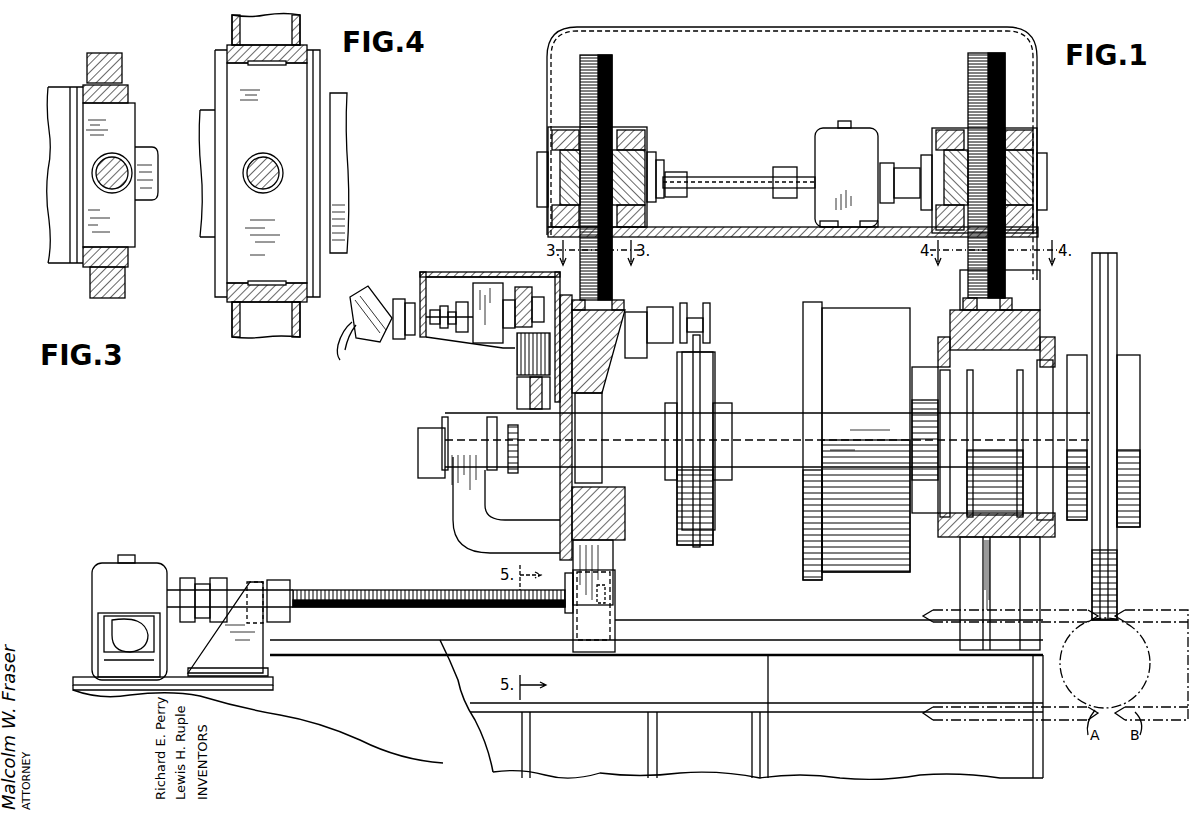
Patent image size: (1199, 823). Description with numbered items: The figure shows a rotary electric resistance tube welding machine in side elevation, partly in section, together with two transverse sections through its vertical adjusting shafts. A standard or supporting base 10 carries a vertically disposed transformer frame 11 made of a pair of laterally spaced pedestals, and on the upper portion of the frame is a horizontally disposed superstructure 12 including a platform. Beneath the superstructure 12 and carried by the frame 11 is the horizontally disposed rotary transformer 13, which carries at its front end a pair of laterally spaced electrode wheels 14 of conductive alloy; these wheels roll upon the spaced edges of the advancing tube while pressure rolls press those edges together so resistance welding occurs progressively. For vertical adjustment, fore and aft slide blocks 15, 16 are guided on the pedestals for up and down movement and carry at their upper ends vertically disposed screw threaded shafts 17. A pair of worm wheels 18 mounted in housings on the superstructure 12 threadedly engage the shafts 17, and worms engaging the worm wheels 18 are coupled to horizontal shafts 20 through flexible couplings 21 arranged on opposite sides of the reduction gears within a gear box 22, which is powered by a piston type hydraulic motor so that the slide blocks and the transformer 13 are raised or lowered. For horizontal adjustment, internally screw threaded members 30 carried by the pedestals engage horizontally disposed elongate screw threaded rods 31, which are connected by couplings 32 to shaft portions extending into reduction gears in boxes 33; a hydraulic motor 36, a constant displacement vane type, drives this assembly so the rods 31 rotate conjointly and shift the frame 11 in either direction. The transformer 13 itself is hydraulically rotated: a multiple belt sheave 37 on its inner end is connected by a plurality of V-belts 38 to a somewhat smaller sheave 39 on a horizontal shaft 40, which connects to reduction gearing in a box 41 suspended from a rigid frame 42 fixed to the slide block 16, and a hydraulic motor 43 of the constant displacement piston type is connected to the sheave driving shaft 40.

In FIG. 1, the supporting base 10 is at (448, 760).
In FIG. 3, the transformer frame 11 is at (127, 296).
In FIG. 4, the transformer frame 11 is at (300, 325).
In FIG. 1, the transformer frame 11 is at (958, 588).
In FIG. 1, the superstructure 12 is at (768, 238).
In FIG. 3, the rotary transformer 13 is at (150, 146).
In FIG. 4, the rotary transformer 13 is at (352, 194).
In FIG. 1, the rotary transformer 13 is at (802, 548).
In FIG. 1, the electrode wheels 14 is at (1104, 253).
In FIG. 4, the slide block 15 is at (232, 270).
In FIG. 1, the slide block 15 is at (1030, 325).
In FIG. 3, the slide block 16 is at (133, 223).
In FIG. 1, the slide block 16 is at (612, 322).
In FIG. 3, the screw threaded shafts 17 is at (100, 171).
In FIG. 4, the screw threaded shafts 17 is at (243, 173).
In FIG. 1, the screw threaded shafts 17 is at (613, 100).
In FIG. 1, the worm wheels 18 is at (1046, 172).
In FIG. 1, the horizontal shafts 20 is at (740, 190).
In FIG. 1, the flexible couplings 21 is at (780, 193).
In FIG. 1, the gear box 22 is at (856, 175).
In FIG. 1, the internally screw threaded members 30 is at (568, 615).
In FIG. 1, the screw threaded rods 31 is at (370, 590).
In FIG. 1, the couplings 32 is at (222, 580).
In FIG. 1, the gear boxes 33 is at (136, 597).
In FIG. 1, the hydraulic motor 36 is at (112, 630).
In FIG. 1, the multiple belt sheave 37 is at (516, 392).
In FIG. 1, the V-belts 38 is at (516, 360).
In FIG. 1, the sheave 39 is at (525, 287).
In FIG. 1, the horizontal shaft 40 is at (452, 306).
In FIG. 1, the gear box 41 is at (488, 283).
In FIG. 1, the rigid frame 42 is at (436, 272).
In FIG. 1, the hydraulic motor 43 is at (382, 292).